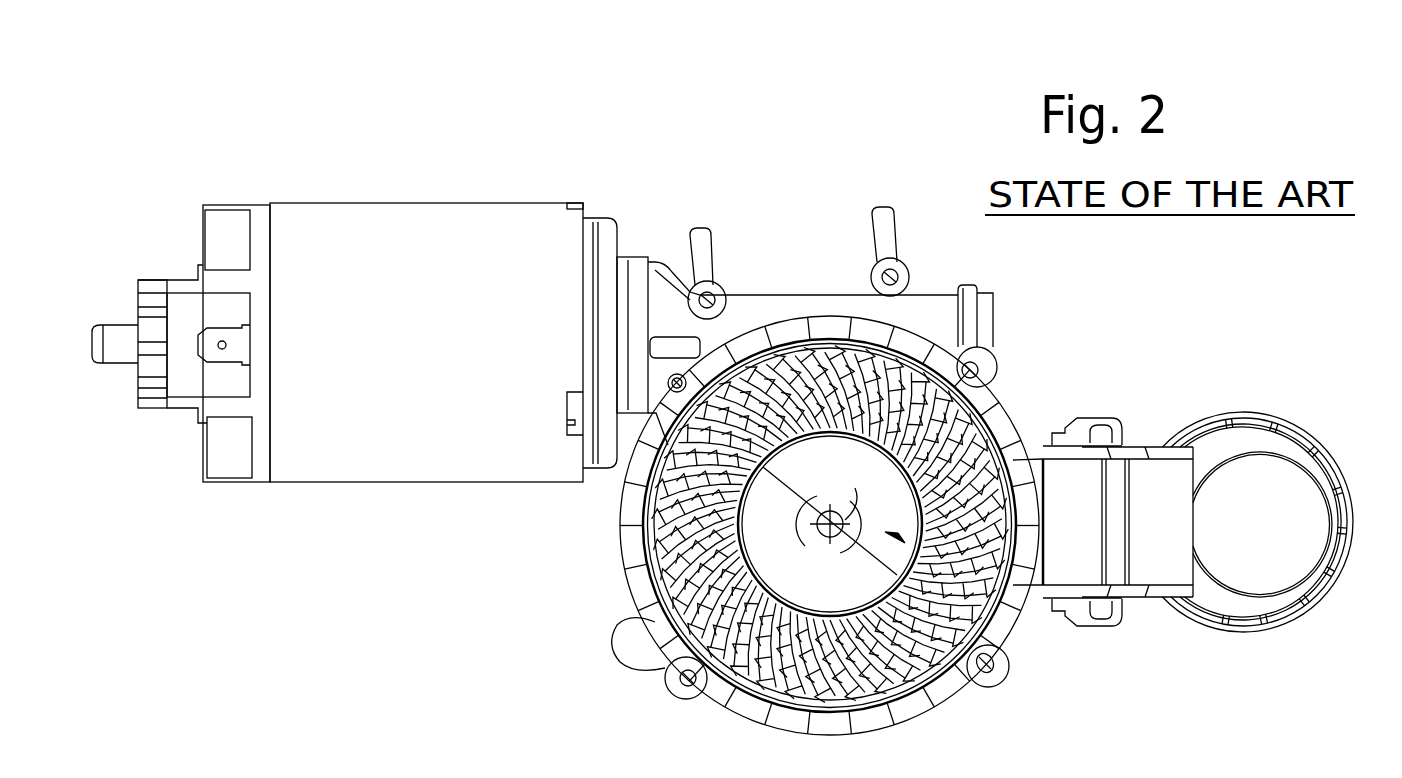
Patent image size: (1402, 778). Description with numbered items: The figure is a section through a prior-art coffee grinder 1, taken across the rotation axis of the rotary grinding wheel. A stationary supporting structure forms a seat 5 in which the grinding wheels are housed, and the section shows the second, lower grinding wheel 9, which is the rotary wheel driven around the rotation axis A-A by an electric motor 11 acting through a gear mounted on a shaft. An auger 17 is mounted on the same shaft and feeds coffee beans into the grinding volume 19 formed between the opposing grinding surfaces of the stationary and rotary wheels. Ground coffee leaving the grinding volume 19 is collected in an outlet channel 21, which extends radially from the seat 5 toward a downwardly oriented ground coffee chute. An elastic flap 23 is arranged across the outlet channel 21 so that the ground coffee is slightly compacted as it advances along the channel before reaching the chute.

The coffee grinder 1 is at (843, 193).
The electric motor 11 is at (421, 340).
The seat 5 is at (1013, 432).
The second, lower grinding wheel 9 is at (913, 429).
The grinding volume 19 is at (967, 597).
The auger 17 is at (818, 545).
The outlet channel 21 is at (1060, 497).
The elastic flap 23 is at (1300, 468).